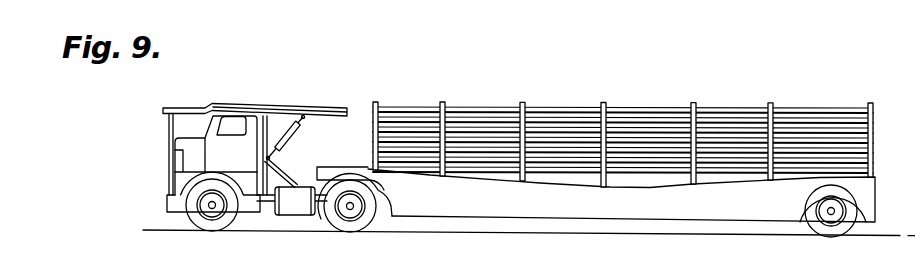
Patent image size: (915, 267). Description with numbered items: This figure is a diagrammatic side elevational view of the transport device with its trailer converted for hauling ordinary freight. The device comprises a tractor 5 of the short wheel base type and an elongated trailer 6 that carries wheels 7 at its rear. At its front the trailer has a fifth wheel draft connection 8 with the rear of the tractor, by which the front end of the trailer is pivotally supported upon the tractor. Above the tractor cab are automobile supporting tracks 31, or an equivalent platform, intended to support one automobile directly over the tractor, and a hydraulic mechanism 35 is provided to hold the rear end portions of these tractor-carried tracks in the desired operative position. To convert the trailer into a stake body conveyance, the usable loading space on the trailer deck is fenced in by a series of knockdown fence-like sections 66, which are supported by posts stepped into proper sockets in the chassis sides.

The tractor 5 is at (258, 150).
The automobile supporting tracks 31 is at (251, 104).
The hydraulic mechanism 35 is at (294, 150).
The fifth wheel draft connection 8 is at (350, 180).
The trailer 6 is at (596, 167).
The wheels 7 is at (838, 230).
The knockdown fence-like sections 66 is at (805, 122).